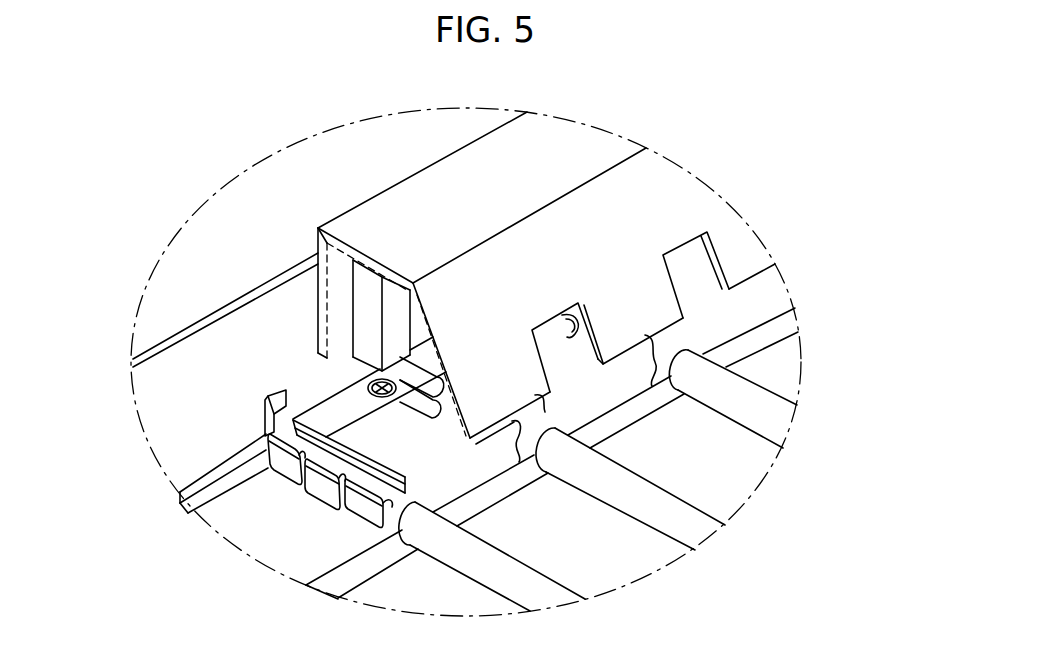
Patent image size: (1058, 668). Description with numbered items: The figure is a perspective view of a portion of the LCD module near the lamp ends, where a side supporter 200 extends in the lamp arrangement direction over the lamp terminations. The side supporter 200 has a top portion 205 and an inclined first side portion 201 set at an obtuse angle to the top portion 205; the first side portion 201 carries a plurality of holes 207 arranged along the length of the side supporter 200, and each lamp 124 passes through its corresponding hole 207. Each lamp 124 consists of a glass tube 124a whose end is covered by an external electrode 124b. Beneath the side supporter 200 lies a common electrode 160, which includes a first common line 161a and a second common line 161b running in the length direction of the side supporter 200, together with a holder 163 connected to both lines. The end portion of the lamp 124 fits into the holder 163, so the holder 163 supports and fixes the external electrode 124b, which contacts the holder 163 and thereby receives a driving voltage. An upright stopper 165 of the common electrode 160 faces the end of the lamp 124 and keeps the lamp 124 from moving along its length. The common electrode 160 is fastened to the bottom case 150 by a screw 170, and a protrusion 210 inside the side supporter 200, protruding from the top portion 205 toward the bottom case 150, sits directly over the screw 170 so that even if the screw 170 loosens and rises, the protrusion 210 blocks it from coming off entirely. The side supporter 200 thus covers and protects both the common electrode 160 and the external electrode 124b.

The side supporter 200 is at (573, 246).
The first side portion 201 is at (702, 198).
The top portion 205 is at (587, 128).
The hole 207 is at (713, 286).
The protrusion 210 is at (367, 307).
The bottom case 150 is at (148, 392).
The common electrode 160 is at (438, 476).
The first common line 161a is at (190, 501).
The second common line 161b is at (325, 585).
The holder 163 is at (358, 525).
The stopper 165 is at (268, 396).
The screw 170 is at (380, 398).
The lamp 124 is at (804, 374).
The glass tube 124a is at (750, 395).
The external electrode 124b is at (672, 350).